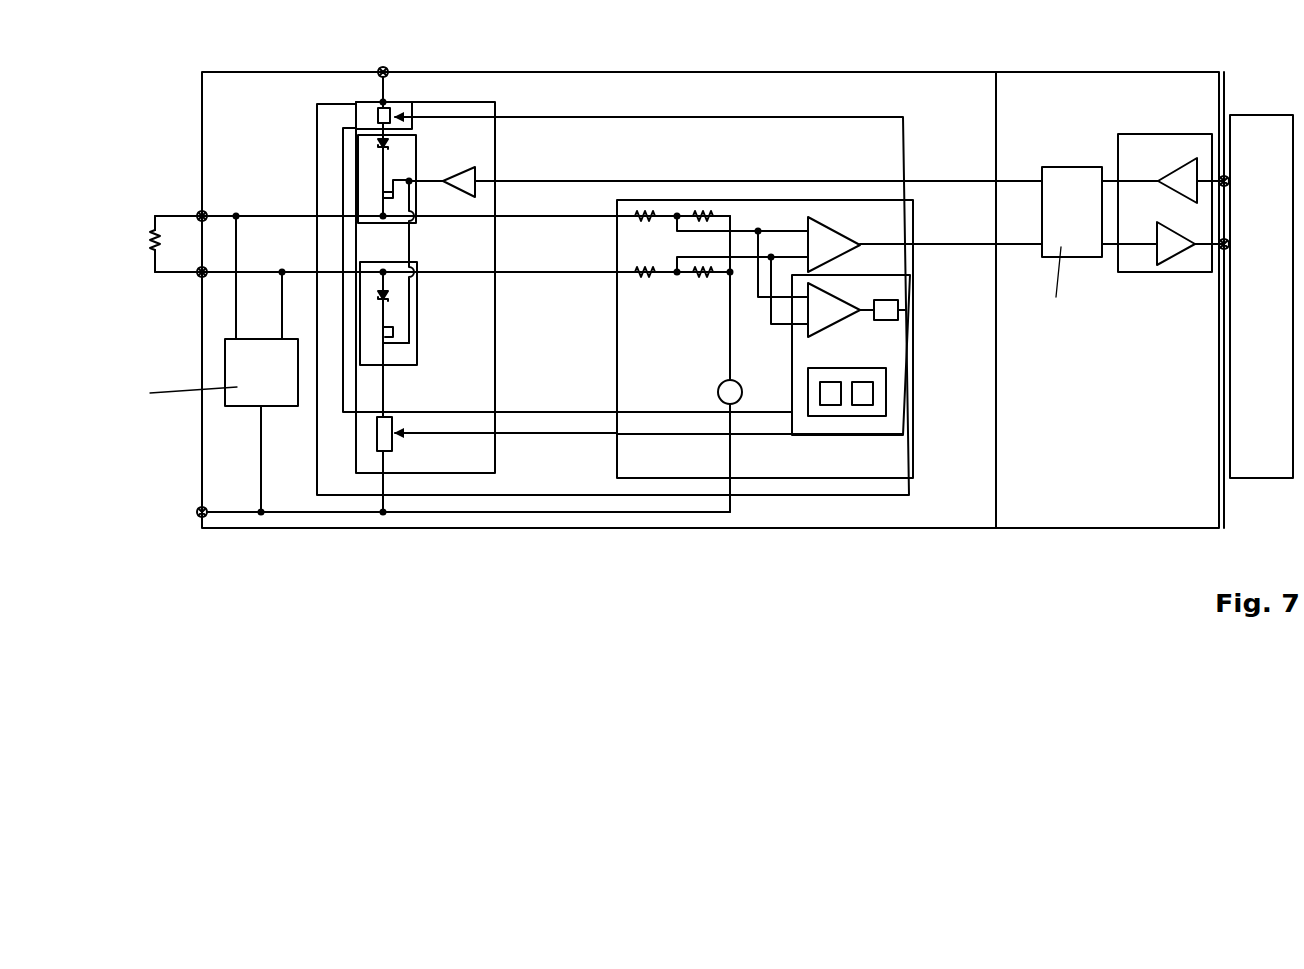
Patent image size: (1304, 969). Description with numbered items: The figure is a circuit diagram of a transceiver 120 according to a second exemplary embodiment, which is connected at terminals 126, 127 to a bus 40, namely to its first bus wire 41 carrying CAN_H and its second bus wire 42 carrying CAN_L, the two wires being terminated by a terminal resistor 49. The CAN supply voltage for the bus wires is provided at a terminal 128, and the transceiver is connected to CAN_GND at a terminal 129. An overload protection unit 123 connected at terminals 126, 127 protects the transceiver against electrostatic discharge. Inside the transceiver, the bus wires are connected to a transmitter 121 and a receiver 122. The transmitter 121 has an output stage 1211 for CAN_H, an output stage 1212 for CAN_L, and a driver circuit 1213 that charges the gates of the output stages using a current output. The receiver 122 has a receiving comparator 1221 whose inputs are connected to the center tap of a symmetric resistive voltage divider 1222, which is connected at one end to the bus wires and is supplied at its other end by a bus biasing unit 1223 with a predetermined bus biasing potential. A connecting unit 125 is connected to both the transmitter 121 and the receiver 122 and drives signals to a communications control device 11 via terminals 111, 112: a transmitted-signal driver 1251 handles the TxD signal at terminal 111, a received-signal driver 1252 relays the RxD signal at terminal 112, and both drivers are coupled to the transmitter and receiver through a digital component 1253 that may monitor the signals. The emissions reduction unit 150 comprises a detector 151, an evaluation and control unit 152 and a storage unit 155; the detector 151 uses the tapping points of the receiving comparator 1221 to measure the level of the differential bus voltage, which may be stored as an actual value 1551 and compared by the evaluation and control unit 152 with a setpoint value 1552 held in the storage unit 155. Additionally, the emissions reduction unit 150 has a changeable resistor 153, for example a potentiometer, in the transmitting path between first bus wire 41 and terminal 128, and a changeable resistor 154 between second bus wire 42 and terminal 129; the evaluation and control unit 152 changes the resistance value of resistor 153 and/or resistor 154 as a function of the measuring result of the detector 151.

The communications control device 11 is at (1262, 115).
The bus 40 is at (424, 228).
The first bus wire 41 is at (160, 216).
The second bus wire 42 is at (157, 274).
The terminal resistor 49 is at (155, 256).
The terminal 111 is at (1232, 182).
The terminal 112 is at (1228, 246).
The transceiver 120 is at (940, 72).
The transmitter 121 is at (480, 101).
The receiver 122 is at (812, 321).
The overload protection unit 123 is at (281, 408).
The connecting unit 125 is at (1125, 72).
The terminal 126 is at (198, 214).
The terminal 127 is at (199, 278).
The terminal 128 is at (384, 67).
The terminal 129 is at (200, 518).
The emissions reduction unit 150 is at (825, 497).
The detector 151 is at (858, 316).
The evaluation and control unit 152 is at (902, 302).
The resistor 153 is at (398, 102).
The resistor 154 is at (393, 445).
The storage unit 155 is at (856, 413).
The output stage 1211 is at (416, 177).
The output stage 1212 is at (418, 352).
The driver circuit 1213 is at (496, 176).
The receiving comparator 1221 is at (844, 229).
The resistive voltage divider 1222 is at (622, 196).
The bus biasing unit 1223 is at (719, 384).
The transmitted-signal driver 1251 is at (1175, 170).
The received-signal driver 1252 is at (1176, 263).
The digital component 1253 is at (1073, 167).
The actual value 1551 is at (820, 392).
The setpoint value 1552 is at (873, 396).